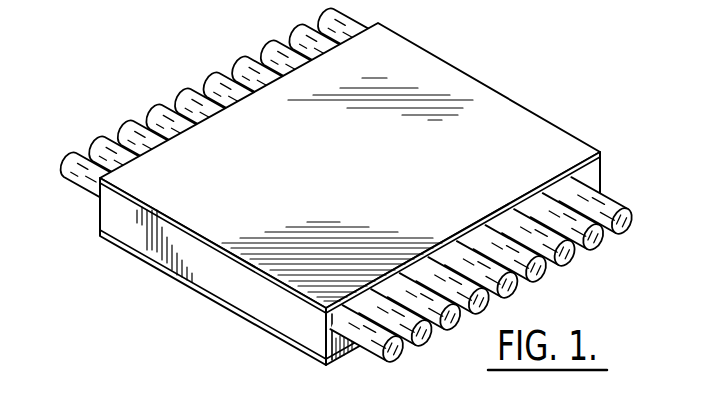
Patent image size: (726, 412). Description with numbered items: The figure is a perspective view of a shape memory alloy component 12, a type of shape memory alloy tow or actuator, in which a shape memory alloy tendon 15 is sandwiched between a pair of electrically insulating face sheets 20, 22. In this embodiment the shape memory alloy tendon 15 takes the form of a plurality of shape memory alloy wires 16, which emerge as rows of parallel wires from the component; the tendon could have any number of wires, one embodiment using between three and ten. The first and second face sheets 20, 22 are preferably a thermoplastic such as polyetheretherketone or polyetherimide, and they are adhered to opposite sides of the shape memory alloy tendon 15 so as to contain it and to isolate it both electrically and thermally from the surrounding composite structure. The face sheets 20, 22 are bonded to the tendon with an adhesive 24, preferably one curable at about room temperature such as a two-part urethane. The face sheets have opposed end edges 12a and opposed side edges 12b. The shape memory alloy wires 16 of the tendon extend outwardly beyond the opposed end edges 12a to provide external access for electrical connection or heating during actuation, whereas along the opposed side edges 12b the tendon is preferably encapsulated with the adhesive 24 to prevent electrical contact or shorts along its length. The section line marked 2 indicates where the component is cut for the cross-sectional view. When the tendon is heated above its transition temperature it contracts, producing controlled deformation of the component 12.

The shape memory alloy component 12 is at (356, 205).
The opposed end edges 12a is at (100, 217).
The opposed side edges 12b is at (598, 150).
The shape memory alloy tendon 15 is at (332, 26).
The shape memory alloy wires 16 is at (596, 236).
The first face sheet 20 is at (252, 318).
The second face sheet 22 is at (178, 221).
The adhesive 24 is at (176, 255).
The section line 2- 2 is at (560, 122).